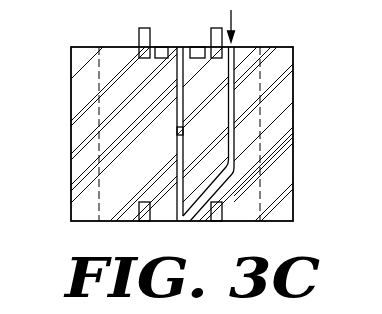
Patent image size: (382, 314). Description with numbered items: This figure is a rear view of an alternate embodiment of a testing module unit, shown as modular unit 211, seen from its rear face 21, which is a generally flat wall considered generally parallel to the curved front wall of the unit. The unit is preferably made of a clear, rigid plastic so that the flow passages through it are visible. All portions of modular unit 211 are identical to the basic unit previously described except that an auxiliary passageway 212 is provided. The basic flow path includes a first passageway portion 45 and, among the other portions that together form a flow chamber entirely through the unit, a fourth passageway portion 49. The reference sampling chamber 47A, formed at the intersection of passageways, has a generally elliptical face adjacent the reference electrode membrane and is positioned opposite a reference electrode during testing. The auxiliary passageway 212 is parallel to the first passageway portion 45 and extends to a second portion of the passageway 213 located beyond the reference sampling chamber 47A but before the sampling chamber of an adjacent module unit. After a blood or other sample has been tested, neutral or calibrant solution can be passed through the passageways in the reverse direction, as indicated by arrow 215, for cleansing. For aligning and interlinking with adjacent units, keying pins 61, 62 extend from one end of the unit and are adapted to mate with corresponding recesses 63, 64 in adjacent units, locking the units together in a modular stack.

The modular unit 211 is at (71, 70).
The rear face 21 is at (270, 144).
The fourth passageway portion 49 is at (177, 97).
The first passageway portion 45 is at (177, 172).
The reference sampling chamber 47A is at (177, 132).
The auxiliary passageway 212 is at (234, 107).
The second portion of the passageway 213 is at (220, 178).
The pin 61 is at (139, 31).
The pin 62 is at (211, 31).
The recess 63 is at (217, 221).
The recess 64 is at (146, 222).
The arrow 215 is at (231, 20).